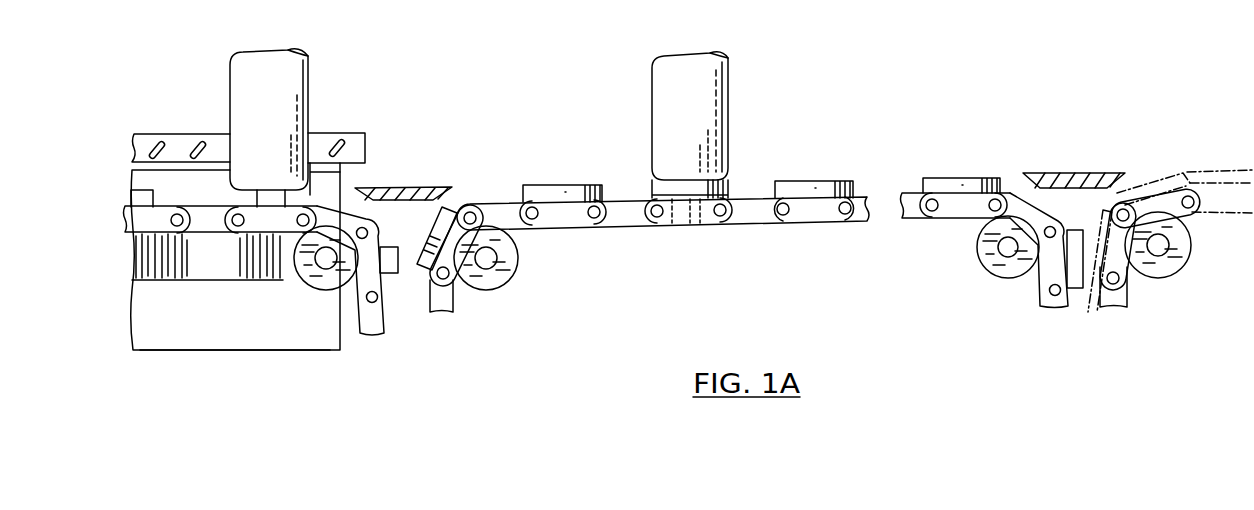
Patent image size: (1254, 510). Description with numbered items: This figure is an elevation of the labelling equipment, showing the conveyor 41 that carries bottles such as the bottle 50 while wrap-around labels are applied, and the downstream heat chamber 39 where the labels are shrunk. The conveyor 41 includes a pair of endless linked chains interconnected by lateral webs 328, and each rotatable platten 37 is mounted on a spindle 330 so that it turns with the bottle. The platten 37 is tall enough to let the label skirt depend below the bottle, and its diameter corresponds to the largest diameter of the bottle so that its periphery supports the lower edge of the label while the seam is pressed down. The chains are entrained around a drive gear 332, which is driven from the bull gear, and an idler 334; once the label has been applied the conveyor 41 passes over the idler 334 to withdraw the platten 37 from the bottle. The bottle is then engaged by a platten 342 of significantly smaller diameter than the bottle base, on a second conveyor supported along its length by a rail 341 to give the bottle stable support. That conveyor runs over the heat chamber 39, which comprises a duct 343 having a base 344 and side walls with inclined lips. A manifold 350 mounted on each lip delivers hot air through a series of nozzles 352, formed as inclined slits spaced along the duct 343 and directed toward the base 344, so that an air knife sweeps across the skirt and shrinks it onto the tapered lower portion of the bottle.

The bottle 50 is at (479, 119).
The nozzles 352 is at (200, 147).
The manifold 350 is at (357, 140).
The platten 342 is at (270, 192).
The duct 343 is at (158, 335).
The heat chamber 39 is at (217, 338).
The rail 341 is at (202, 262).
The base 344 is at (265, 350).
The idler 334 is at (495, 277).
The conveyor 41 is at (577, 248).
The lateral webs 328 is at (675, 214).
The spindles 330 is at (697, 225).
The platten 37 is at (672, 190).
The drive gear 332 is at (983, 257).